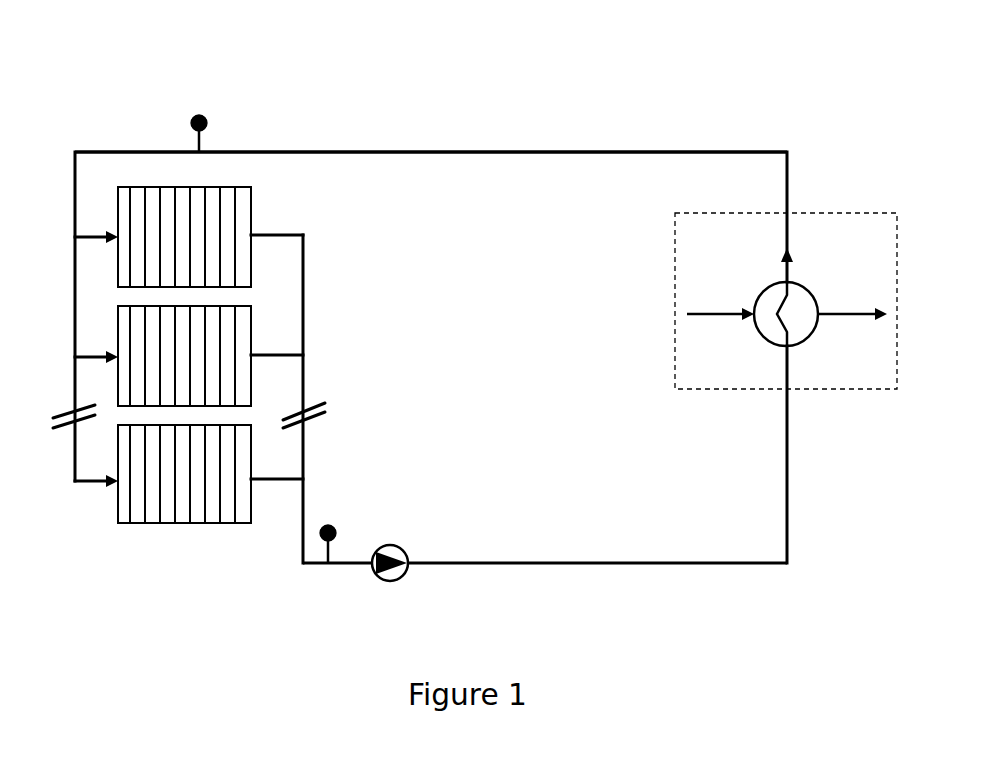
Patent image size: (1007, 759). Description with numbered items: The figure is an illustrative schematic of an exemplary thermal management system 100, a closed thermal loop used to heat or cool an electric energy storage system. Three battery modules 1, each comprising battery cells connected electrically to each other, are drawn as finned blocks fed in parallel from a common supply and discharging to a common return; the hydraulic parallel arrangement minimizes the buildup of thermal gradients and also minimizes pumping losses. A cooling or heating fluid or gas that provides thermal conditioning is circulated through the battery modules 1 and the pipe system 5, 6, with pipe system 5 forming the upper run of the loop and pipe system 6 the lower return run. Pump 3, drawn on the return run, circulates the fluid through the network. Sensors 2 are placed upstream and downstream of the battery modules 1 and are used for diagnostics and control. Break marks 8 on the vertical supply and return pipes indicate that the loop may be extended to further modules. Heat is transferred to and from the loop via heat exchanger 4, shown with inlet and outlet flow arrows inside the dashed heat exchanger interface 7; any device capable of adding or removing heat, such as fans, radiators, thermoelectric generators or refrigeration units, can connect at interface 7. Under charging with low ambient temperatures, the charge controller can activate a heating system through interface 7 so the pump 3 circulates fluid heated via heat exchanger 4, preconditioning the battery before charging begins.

The heating system 100 is at (368, 132).
The battery modules 1 is at (242, 208).
The sensors 2 is at (192, 108).
The pump 3 is at (377, 572).
The heat exchanger 4 is at (807, 300).
The pipe system 5 is at (615, 160).
The pipe system 6 is at (655, 558).
The heat exchanger interface 7 is at (880, 213).
The pipe break marks 8 is at (327, 403).